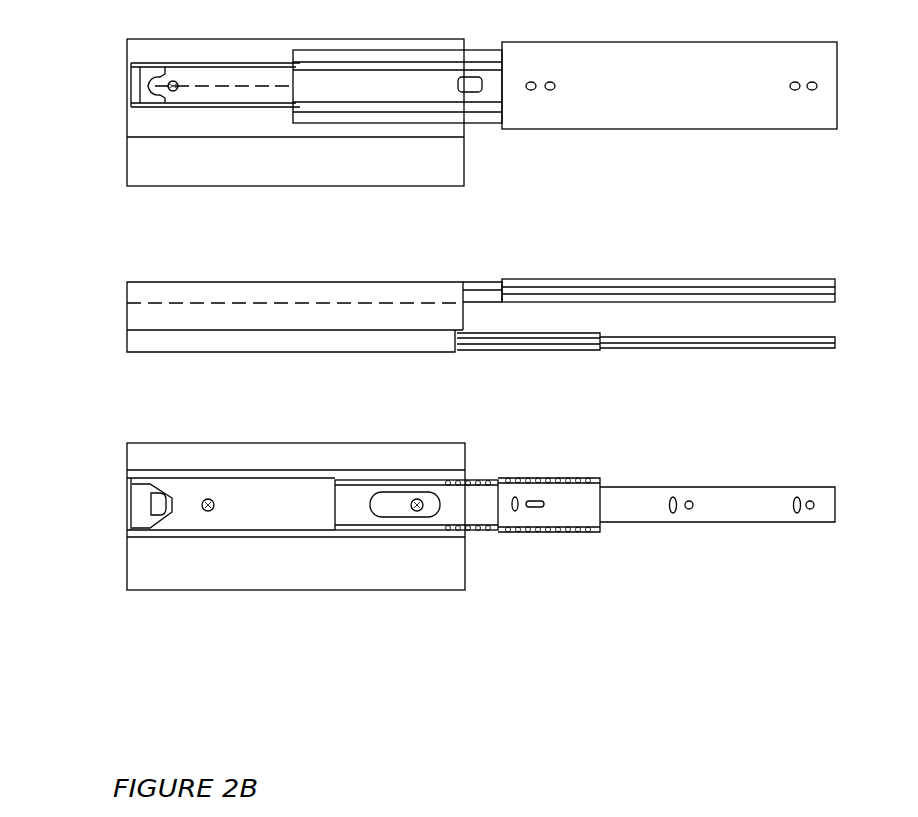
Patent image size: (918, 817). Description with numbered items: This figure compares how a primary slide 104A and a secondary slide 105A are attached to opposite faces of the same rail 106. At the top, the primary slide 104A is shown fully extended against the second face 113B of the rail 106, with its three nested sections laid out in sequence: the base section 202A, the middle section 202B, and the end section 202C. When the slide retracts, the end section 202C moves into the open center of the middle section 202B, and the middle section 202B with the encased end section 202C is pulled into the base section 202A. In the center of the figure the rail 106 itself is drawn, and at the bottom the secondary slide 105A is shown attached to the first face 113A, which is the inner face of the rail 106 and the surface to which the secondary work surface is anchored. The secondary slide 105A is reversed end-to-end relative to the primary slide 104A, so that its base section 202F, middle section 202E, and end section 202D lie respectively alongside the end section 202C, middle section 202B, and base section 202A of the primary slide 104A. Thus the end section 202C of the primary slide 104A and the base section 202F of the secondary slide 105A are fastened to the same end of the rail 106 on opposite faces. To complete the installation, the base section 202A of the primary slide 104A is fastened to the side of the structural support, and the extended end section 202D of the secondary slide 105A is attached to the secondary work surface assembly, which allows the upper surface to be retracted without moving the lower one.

The second face 113B is at (137, 123).
The primary slide 104A is at (733, 129).
The base section 202A is at (655, 131).
The middle section 202B is at (427, 123).
The end section 202C is at (268, 108).
The left rail 106 is at (150, 313).
The end section 202D is at (645, 497).
The middle section 202E is at (455, 497).
The base section 202F is at (200, 487).
The first face 113A is at (138, 550).
The secondary slide 105A is at (733, 522).